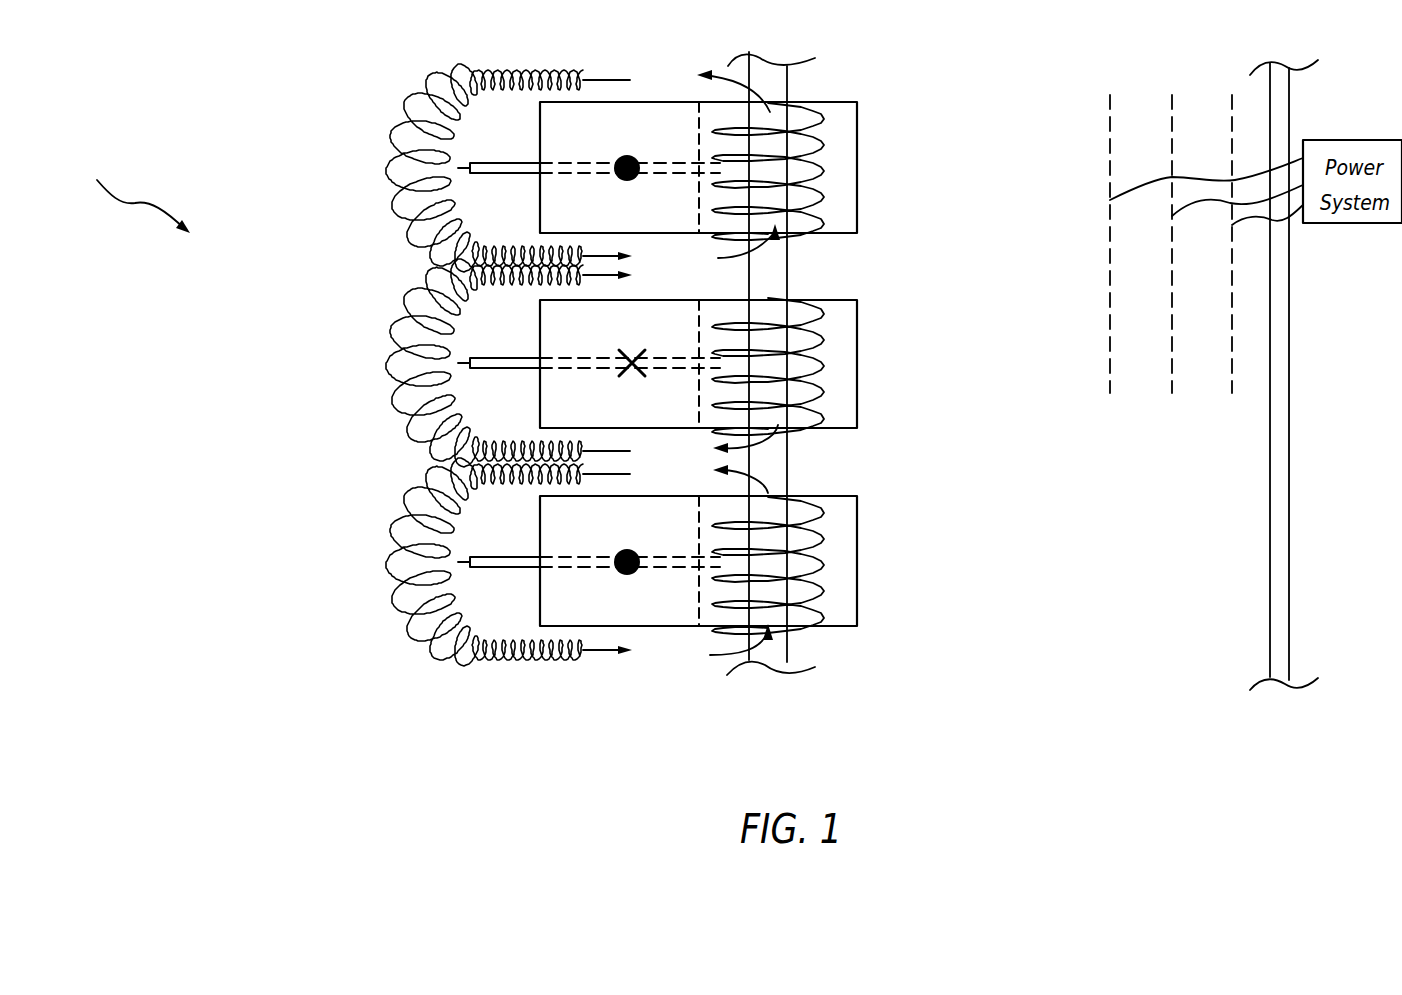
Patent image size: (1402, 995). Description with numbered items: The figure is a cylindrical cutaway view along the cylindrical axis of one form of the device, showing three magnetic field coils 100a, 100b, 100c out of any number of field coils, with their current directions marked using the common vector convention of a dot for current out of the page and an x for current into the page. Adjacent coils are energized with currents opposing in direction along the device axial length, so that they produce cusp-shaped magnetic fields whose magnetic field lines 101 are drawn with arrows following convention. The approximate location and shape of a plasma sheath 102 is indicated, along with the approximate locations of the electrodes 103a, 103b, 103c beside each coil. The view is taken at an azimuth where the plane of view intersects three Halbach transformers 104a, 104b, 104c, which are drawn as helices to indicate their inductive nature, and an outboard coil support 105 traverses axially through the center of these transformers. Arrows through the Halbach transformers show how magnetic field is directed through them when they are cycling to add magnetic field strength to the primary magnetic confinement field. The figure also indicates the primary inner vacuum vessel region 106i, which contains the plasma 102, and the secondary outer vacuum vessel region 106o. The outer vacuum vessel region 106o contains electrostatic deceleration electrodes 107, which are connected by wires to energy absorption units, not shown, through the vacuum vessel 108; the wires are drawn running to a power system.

The magnetic field coil 100a is at (657, 167).
The magnetic field coil 100b is at (657, 364).
The magnetic field coil 100c is at (657, 561).
The magnetic field line 101 is at (458, 292).
The plasma sheath 102 is at (400, 205).
The electrode 103a is at (405, 118).
The electrode 103b is at (402, 318).
The electrode 103c is at (405, 512).
The Halbach transformer 104a is at (846, 193).
The Halbach transformer 104b is at (822, 397).
The Halbach transformer 104c is at (822, 569).
The outboard coil support 105 is at (778, 272).
The primary inner vacuum vessel region 106i is at (124, 190).
The secondary outer vacuum vessel region 106o is at (984, 110).
The electrostatic deceleration electrodes 107 is at (1110, 313).
The vacuum vessel 108 is at (1270, 584).